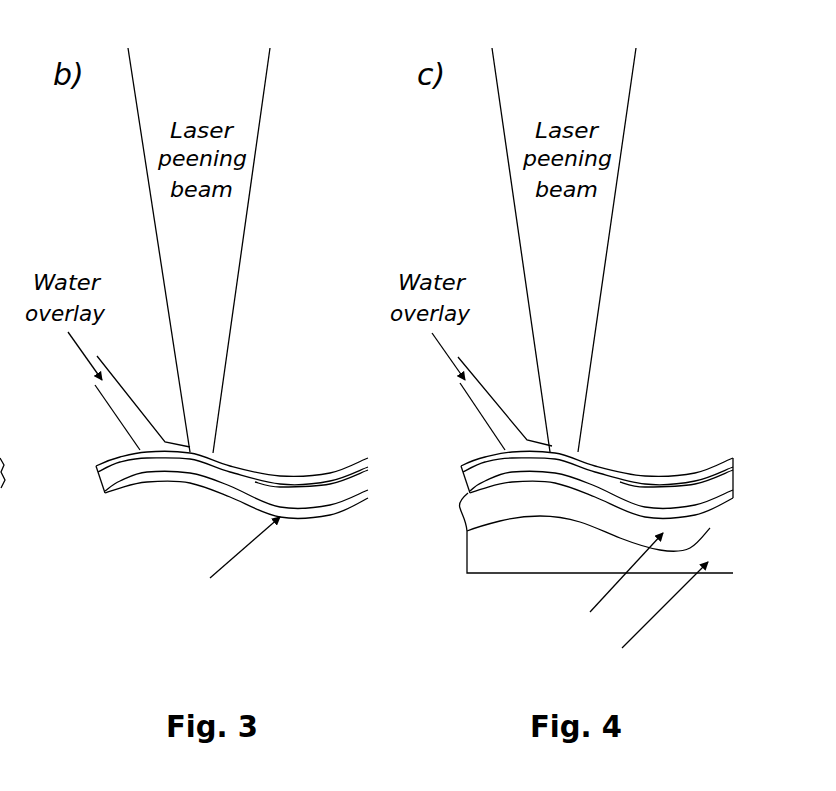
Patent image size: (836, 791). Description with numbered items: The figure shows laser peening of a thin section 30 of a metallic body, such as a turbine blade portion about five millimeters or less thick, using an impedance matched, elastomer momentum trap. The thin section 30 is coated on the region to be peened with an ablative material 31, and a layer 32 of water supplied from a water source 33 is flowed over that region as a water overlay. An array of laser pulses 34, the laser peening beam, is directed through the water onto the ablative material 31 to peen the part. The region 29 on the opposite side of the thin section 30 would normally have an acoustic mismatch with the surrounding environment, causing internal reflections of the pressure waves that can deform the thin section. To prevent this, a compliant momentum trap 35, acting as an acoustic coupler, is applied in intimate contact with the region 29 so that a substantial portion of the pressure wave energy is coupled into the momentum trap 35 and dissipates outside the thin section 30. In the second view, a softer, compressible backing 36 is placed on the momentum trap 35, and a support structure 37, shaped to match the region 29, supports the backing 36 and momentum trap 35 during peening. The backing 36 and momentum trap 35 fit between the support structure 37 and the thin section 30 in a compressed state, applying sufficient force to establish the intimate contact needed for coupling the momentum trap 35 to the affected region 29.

In FIG. 3, the region opposite the region to be peened 29 is at (193, 478).
In FIG. 4, the region opposite the region to be peened 29 is at (568, 475).
In FIG. 3, the thin section 30 is at (3, 478).
In FIG. 4, the thin section 30 is at (717, 492).
In FIG. 3, the ablative material 31 is at (120, 453).
In FIG. 4, the ablative material 31 is at (495, 453).
In FIG. 3, the layer of water 32 is at (229, 461).
In FIG. 4, the layer of water 32 is at (600, 465).
In FIG. 3, the water source 33 is at (117, 410).
In FIG. 4, the water source 33 is at (490, 408).
In FIG. 3, the array of laser pulses 34 is at (192, 245).
In FIG. 4, the array of laser pulses 34 is at (567, 245).
In FIG. 3, the compliant momentum trap 35 is at (340, 510).
In FIG. 4, the compliant momentum trap 35 is at (733, 497).
In FIG. 4, the softer, compressible backing 36 is at (710, 525).
In FIG. 4, the support structure 37 is at (711, 573).